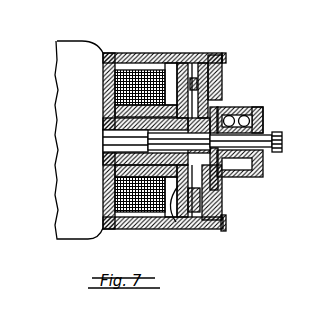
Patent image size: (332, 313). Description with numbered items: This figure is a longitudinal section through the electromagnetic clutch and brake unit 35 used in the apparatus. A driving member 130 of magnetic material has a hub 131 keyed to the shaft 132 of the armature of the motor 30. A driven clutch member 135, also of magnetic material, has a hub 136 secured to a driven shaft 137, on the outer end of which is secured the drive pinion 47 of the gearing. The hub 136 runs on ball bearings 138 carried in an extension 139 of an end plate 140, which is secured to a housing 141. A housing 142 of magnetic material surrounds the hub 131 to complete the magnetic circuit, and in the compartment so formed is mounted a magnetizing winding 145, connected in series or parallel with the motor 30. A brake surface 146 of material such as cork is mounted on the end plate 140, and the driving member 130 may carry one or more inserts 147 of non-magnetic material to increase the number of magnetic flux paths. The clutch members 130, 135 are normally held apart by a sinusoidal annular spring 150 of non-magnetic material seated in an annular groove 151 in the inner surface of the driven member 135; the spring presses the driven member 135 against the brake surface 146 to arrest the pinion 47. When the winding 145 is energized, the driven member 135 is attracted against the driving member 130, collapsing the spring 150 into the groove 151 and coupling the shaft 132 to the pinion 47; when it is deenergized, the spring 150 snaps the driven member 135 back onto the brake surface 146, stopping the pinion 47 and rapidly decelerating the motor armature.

The motor 30 is at (66, 44).
The housing 142 is at (107, 52).
The clutch and brake unit 35 is at (150, 46).
The driving member 130 is at (173, 53).
The sinusoidal annular spring 150 is at (192, 62).
The driven clutch member 135 is at (215, 55).
The brake surface 146 is at (226, 58).
The hub 136 is at (233, 108).
The ball bearings 138 is at (250, 107).
The driven shaft 137 is at (268, 112).
The drive pinion 47 is at (283, 134).
The extension 139 is at (250, 180).
The end plate 140 is at (222, 200).
The housing 141 is at (207, 231).
The hub 131 is at (103, 122).
The shaft 132 is at (103, 149).
The magnetizing winding 145 is at (113, 204).
The inserts 147 is at (175, 223).
The annular groove 151 is at (192, 215).